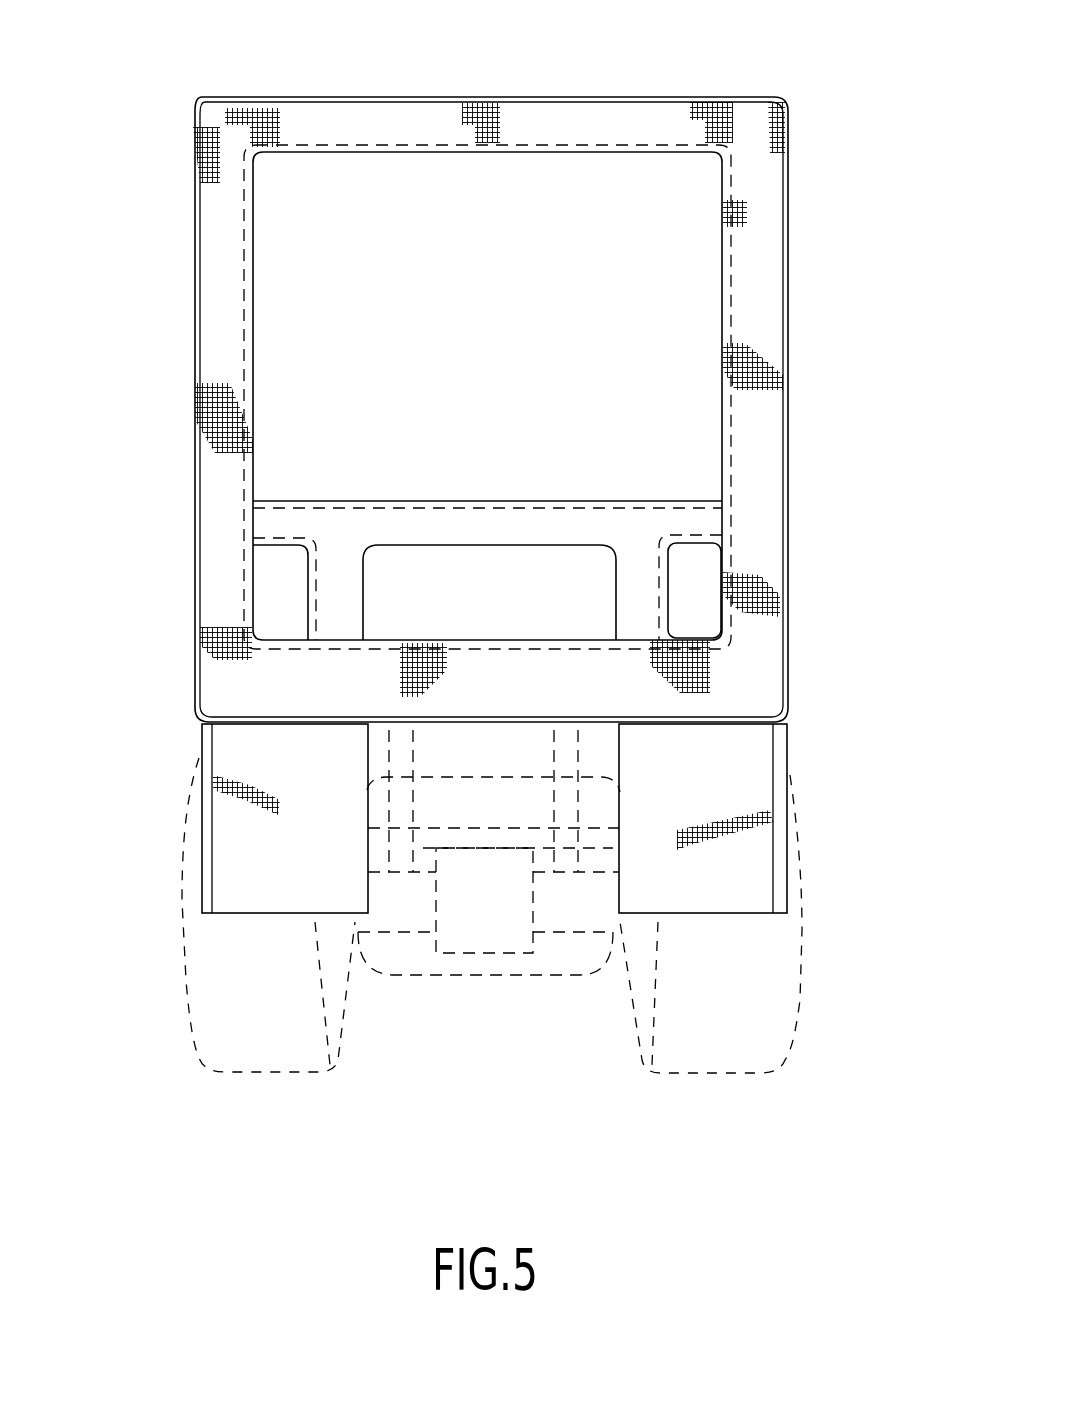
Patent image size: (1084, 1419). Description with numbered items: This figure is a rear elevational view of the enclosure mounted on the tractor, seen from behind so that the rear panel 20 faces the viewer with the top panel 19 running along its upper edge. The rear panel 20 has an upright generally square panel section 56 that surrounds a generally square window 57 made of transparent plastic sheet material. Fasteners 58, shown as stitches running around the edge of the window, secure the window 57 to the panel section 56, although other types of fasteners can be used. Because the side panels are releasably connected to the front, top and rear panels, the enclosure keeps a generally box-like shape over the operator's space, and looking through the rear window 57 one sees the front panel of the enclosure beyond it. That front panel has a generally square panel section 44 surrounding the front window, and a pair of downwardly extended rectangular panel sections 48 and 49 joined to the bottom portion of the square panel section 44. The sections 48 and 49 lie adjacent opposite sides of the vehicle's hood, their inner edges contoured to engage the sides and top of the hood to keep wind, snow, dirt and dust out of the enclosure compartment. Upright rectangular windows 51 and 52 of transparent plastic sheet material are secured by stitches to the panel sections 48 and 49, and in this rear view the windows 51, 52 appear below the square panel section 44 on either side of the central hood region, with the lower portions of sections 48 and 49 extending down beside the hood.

The top panel 19 is at (478, 72).
The rear panel 20 is at (758, 262).
The panel section 56 is at (213, 320).
The window 57 is at (277, 428).
The fasteners 58 is at (247, 515).
The square panel section 44 is at (682, 525).
The window 52 is at (270, 608).
The window 51 is at (688, 610).
The rectangular panel section 49 is at (222, 820).
The rectangular panel section 48 is at (743, 813).